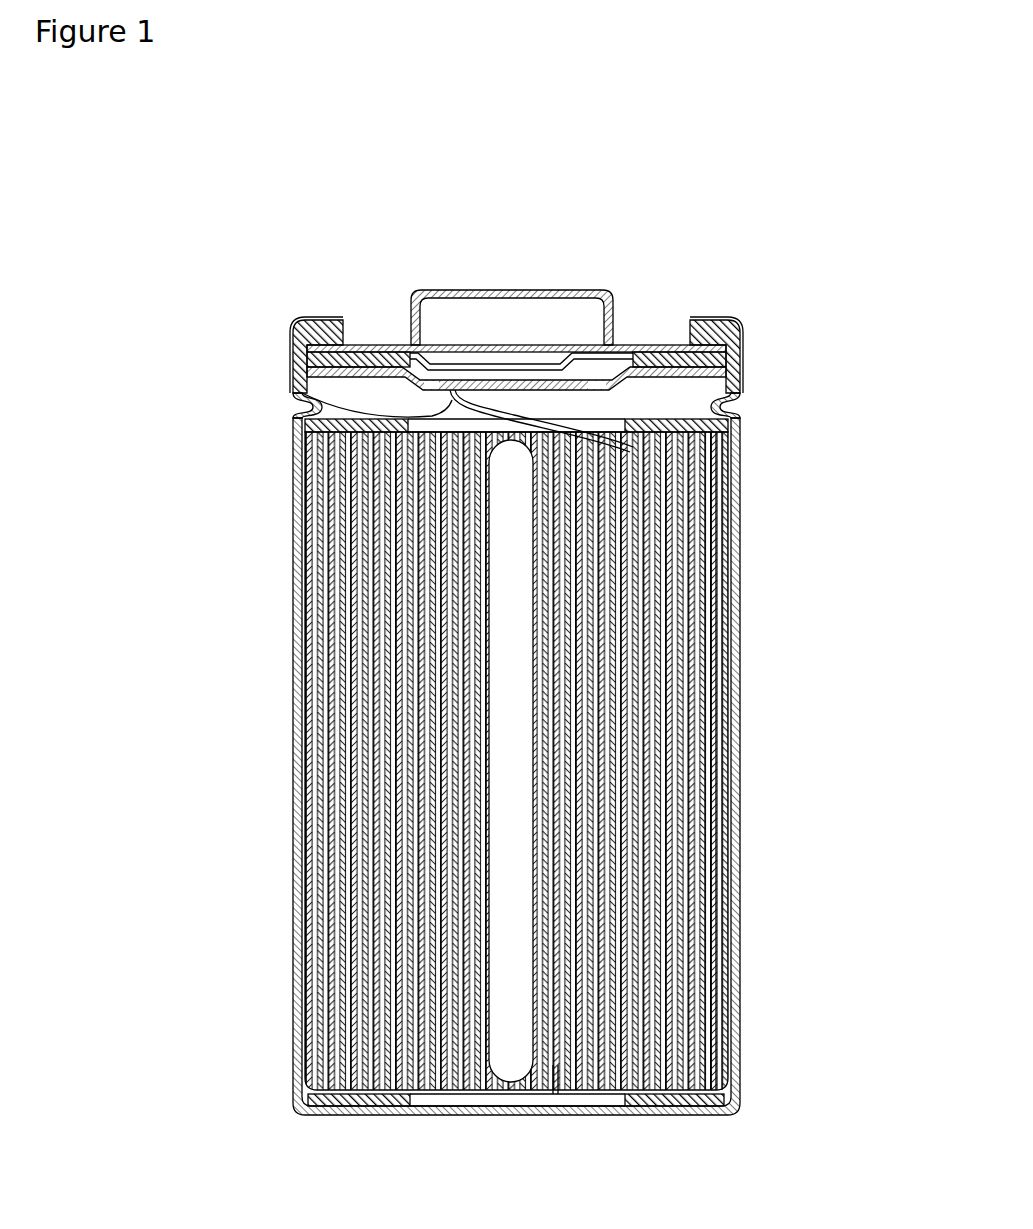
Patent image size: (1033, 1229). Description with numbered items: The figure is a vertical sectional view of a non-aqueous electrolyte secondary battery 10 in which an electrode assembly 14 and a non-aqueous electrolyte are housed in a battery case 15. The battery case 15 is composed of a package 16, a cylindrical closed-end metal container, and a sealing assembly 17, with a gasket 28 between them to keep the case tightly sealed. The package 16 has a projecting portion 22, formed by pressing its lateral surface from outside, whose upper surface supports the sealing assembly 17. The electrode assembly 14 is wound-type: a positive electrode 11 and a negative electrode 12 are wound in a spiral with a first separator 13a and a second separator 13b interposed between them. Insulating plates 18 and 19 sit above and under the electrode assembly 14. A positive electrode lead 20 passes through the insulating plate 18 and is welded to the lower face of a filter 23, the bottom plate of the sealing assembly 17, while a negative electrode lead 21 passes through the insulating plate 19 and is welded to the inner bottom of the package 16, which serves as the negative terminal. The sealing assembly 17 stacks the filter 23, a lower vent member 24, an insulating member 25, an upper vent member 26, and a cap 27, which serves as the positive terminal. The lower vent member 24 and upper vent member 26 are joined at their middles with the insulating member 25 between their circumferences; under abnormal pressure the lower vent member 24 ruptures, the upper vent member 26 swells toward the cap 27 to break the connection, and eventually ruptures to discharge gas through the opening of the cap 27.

The non-aqueous electrolyte secondary battery 10 is at (745, 320).
The positive electrode 11 is at (728, 822).
The negative electrode 12 is at (728, 850).
The first separator 13a is at (728, 877).
The second separator 13b is at (718, 903).
The electrode assembly 14 is at (819, 820).
The battery case 15 is at (726, 238).
The package 16 is at (707, 326).
The sealing assembly 17 is at (645, 346).
The insulating plate 18 is at (738, 430).
The insulating plate 19 is at (740, 1104).
The positive electrode lead 20 is at (300, 385).
The negative electrode lead 21 is at (580, 1108).
The projecting portion 22 is at (300, 402).
The filter 23 is at (514, 380).
The lower vent member 24 is at (425, 352).
The insulating member 25 is at (368, 345).
The upper vent member 26 is at (446, 352).
The cap 27 is at (585, 290).
The gasket 28 is at (743, 340).